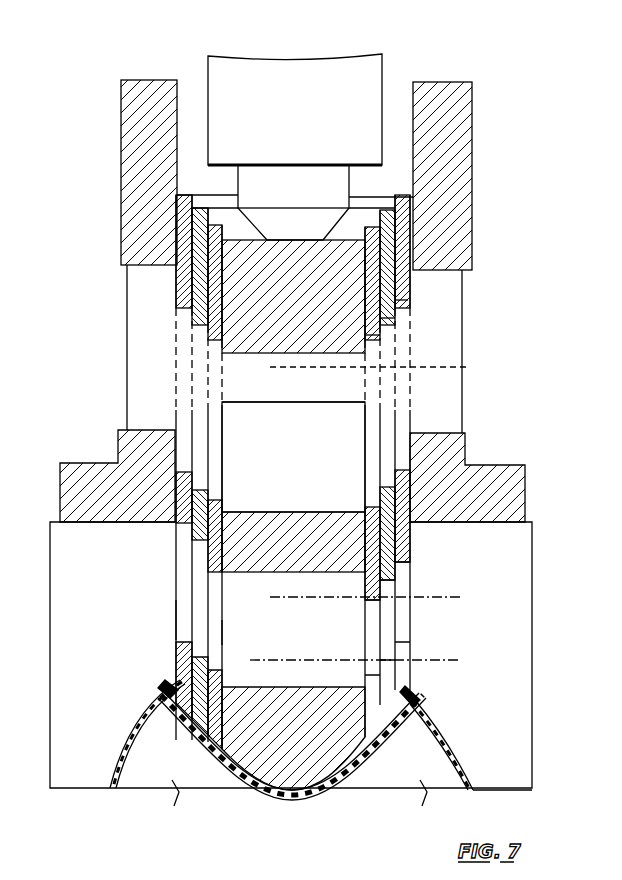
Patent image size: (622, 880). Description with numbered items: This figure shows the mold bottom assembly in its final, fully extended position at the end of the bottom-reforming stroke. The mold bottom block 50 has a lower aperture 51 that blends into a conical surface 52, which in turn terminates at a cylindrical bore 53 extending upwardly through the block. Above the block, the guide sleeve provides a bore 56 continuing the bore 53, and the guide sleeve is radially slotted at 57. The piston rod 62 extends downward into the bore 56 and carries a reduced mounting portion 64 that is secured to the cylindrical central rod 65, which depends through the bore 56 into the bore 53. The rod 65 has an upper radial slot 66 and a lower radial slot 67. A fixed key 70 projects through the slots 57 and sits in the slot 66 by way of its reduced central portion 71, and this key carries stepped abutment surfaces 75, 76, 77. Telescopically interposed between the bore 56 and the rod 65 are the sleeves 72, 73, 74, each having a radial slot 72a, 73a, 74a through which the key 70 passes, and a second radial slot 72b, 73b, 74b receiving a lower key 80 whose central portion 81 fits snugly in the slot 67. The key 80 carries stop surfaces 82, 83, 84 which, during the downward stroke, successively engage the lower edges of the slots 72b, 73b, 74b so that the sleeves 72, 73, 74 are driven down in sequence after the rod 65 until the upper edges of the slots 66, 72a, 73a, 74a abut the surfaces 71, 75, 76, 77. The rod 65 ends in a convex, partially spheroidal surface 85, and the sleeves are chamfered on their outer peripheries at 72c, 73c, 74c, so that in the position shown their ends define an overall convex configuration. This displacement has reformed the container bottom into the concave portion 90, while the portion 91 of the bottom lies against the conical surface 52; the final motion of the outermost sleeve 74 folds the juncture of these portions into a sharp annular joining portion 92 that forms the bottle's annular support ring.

The mold bottom block 50 is at (540, 553).
The lower aperture 51 is at (478, 786).
The conical surface 52 is at (452, 748).
The cylindrical bore 53 is at (400, 628).
The bore of guide sleeve 56 is at (418, 495).
The radial slot of guide sleeve 57 is at (143, 268).
The piston rod 62 is at (281, 121).
The reduced mounting portion 64 is at (281, 199).
The central rod 65 is at (281, 313).
The upper radial slot 66 is at (245, 353).
The lower radial slot 67 is at (252, 572).
The fixed key 70 is at (440, 387).
The central portion of key 71 is at (355, 397).
The inner sleeve 72 is at (372, 253).
The intermediate sleeve 73 is at (395, 232).
The outermost sleeve 74 is at (405, 208).
The stepped surface of key 75 is at (372, 338).
The stepped surface of key 76 is at (385, 322).
The stepped surface of key 77 is at (405, 305).
The radial slot of inner sleeve 72a is at (373, 510).
The radial slot of intermediate sleeve 73a is at (390, 490).
The radial slot of outermost sleeve 74a is at (403, 470).
The second radial slot of inner sleeve 72b is at (213, 570).
The second radial slot of intermediate sleeve 73b is at (197, 552).
The second radial slot of outermost sleeve 74b is at (182, 538).
The chamfered end of inner sleeve 72c is at (215, 755).
The chamfered end of intermediate sleeve 73c is at (200, 740).
The chamfered end of outermost sleeve 74c is at (185, 712).
The lower key 80 is at (200, 617).
The central portion of lower key 81 is at (240, 632).
The stop surface 82 is at (385, 590).
The stop surface 83 is at (392, 598).
The stop surface 84 is at (402, 605).
The convex lower end of rod 85 is at (285, 791).
The concave portion of bottom 90 is at (360, 745).
The portion of bottom against conical surface 91 is at (432, 730).
The annular joining portion 92 is at (425, 705).